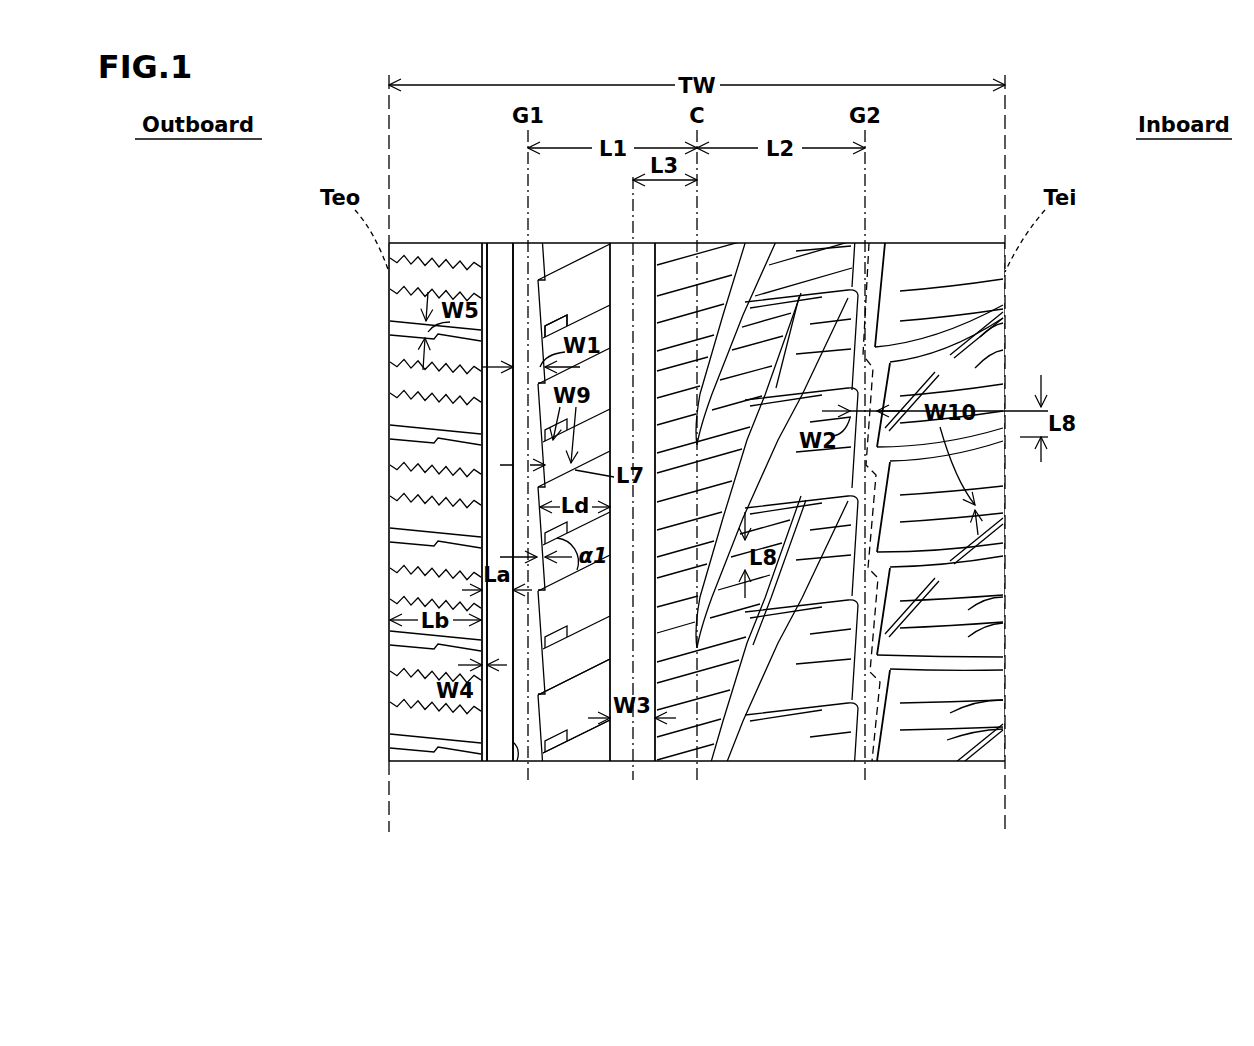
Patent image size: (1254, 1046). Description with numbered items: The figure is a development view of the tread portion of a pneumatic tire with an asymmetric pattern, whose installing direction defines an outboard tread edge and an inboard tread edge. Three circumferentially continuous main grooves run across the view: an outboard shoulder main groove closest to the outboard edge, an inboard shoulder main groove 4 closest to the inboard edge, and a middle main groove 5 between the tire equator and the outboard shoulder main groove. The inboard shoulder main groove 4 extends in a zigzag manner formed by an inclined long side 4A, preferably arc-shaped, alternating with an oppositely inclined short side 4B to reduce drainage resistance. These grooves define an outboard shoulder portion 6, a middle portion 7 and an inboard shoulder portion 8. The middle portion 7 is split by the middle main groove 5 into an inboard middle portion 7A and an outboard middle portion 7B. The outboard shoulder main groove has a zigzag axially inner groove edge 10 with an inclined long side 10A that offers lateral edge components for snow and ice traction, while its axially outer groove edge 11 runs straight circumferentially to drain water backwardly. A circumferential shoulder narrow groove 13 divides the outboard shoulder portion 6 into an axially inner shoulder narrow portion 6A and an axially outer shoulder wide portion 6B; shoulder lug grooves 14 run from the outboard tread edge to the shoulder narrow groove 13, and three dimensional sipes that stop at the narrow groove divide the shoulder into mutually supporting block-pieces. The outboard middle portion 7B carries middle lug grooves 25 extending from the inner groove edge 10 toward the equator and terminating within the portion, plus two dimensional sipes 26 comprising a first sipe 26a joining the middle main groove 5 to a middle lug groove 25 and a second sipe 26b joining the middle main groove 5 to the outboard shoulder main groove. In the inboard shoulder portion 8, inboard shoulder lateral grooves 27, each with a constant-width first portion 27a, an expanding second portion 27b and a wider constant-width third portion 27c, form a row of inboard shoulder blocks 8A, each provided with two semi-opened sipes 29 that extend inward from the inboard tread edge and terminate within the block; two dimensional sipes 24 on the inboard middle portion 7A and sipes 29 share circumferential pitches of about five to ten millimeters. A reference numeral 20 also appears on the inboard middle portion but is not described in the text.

The inboard shoulder main groove 4 is at (871, 502).
The inclined long side 4A is at (940, 444).
The inclined short side 4B is at (940, 555).
The middle main groove 5 is at (632, 502).
The outboard shoulder portion 6 is at (451, 502).
The axially inner shoulder narrow portion 6A is at (500, 502).
The axially outer shoulder wide portion 6B is at (435, 504).
The middle portion 7 is at (685, 470).
The inboard middle portion 7A is at (756, 470).
The outboard middle portion 7B is at (561, 469).
The inboard shoulder portion 8 is at (940, 474).
The inboard shoulder block 8A is at (939, 474).
The axially inner groove edge 10 is at (497, 502).
The inclined long side 10A is at (500, 502).
The axially outer groove edge 11 is at (515, 751).
The shoulder narrow groove 13 is at (484, 502).
The shoulder lug grooves 14 is at (939, 333).
The inclined groove 20 is at (772, 470).
The two dimensional sipes 24 is at (779, 471).
The middle lug grooves 25 is at (556, 326).
The two dimensional sipes 26 is at (574, 706).
The first sipe 26a is at (574, 677).
The second sipe 26b is at (576, 736).
The inboard shoulder lateral grooves 27 is at (944, 474).
The first portion 27a is at (944, 165).
The second portion 27b is at (944, 371).
The third portion 27c is at (944, 680).
The two dimensional semi-opened sipe 29 is at (951, 509).